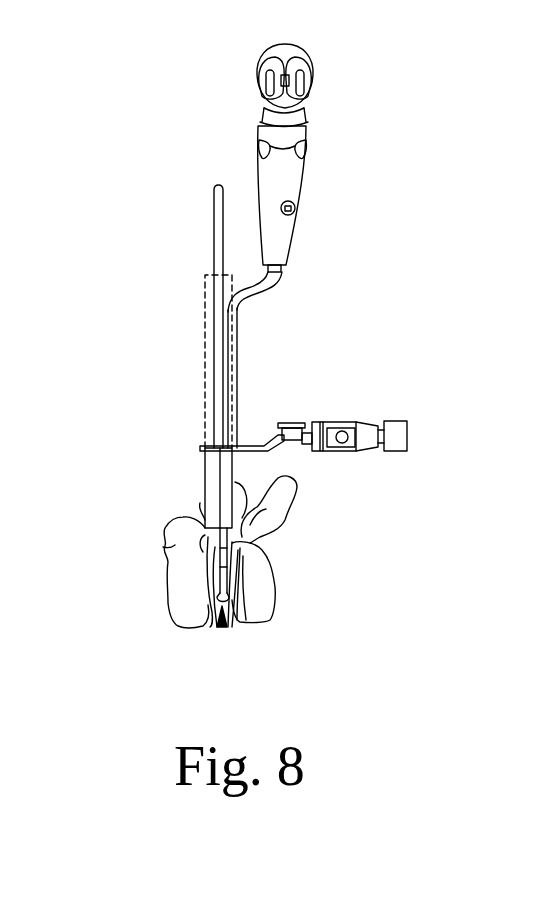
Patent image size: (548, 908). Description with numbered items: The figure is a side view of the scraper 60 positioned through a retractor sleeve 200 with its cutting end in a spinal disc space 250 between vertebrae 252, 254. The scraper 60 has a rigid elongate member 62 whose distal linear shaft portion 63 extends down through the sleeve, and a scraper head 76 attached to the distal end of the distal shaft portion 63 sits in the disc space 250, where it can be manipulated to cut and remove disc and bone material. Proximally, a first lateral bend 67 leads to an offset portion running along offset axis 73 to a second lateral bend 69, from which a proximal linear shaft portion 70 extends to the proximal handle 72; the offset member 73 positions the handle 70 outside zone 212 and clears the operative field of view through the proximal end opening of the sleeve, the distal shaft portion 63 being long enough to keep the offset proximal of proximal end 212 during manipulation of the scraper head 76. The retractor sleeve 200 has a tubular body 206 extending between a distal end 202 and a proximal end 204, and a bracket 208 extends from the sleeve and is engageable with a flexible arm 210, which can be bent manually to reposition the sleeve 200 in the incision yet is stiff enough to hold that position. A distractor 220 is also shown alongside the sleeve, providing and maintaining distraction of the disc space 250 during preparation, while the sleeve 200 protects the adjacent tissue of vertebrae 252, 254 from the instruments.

The scraper 60 is at (255, 322).
The rigid elongate member 62 is at (255, 349).
The distal linear shaft portion 63 is at (228, 343).
The first lateral bend 67 is at (238, 300).
The second lateral bend 69 is at (279, 271).
The proximal linear shaft portion 70 is at (306, 171).
The proximal handle 72 is at (305, 49).
The offset axis 73 is at (273, 295).
The scraper head 76 is at (222, 630).
The retractor sleeve 200 is at (192, 479).
The distal end 202 is at (203, 448).
The proximal end 204 is at (203, 517).
The tubular body 206 is at (237, 480).
The bracket 208 is at (253, 441).
The flexible arm 210 is at (342, 421).
The proximal end 212 is at (205, 275).
The distractor 220 is at (198, 235).
The spinal disc space 250 is at (237, 630).
The vertebra 252 is at (168, 605).
The vertebra 254 is at (272, 582).